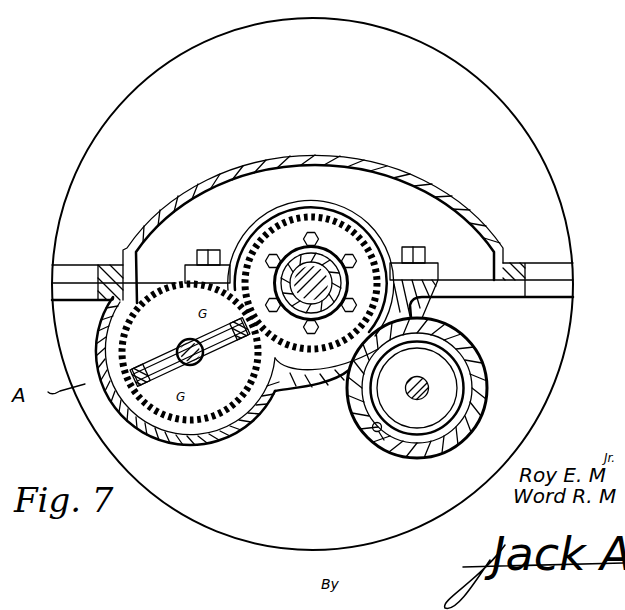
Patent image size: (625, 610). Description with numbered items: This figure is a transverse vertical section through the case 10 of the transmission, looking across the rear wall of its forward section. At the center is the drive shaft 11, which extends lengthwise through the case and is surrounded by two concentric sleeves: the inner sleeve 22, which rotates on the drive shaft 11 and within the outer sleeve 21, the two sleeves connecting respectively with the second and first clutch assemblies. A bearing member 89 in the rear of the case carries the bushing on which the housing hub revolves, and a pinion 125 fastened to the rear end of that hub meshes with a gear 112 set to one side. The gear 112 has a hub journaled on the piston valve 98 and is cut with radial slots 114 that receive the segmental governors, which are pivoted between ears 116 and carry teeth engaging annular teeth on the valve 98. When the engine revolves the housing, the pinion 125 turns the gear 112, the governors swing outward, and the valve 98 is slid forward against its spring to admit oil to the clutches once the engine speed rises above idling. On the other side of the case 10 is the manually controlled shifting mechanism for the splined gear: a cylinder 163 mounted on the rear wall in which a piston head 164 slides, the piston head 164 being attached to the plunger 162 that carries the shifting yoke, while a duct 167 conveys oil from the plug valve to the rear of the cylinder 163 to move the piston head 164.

The case 10 is at (517, 134).
The pinion 125 is at (343, 240).
The bearing member 89 is at (226, 262).
The drive shaft 11 is at (337, 252).
The sleeve 22 is at (349, 284).
The sleeve 21 is at (300, 324).
The gear 112 is at (251, 424).
The piston valve 98 is at (199, 365).
The radial slots 114 is at (173, 340).
The ears 116 is at (150, 366).
The piston head 164 is at (468, 362).
The cylinder 163 is at (468, 443).
The plunger 162 is at (428, 388).
The duct 167 is at (377, 432).